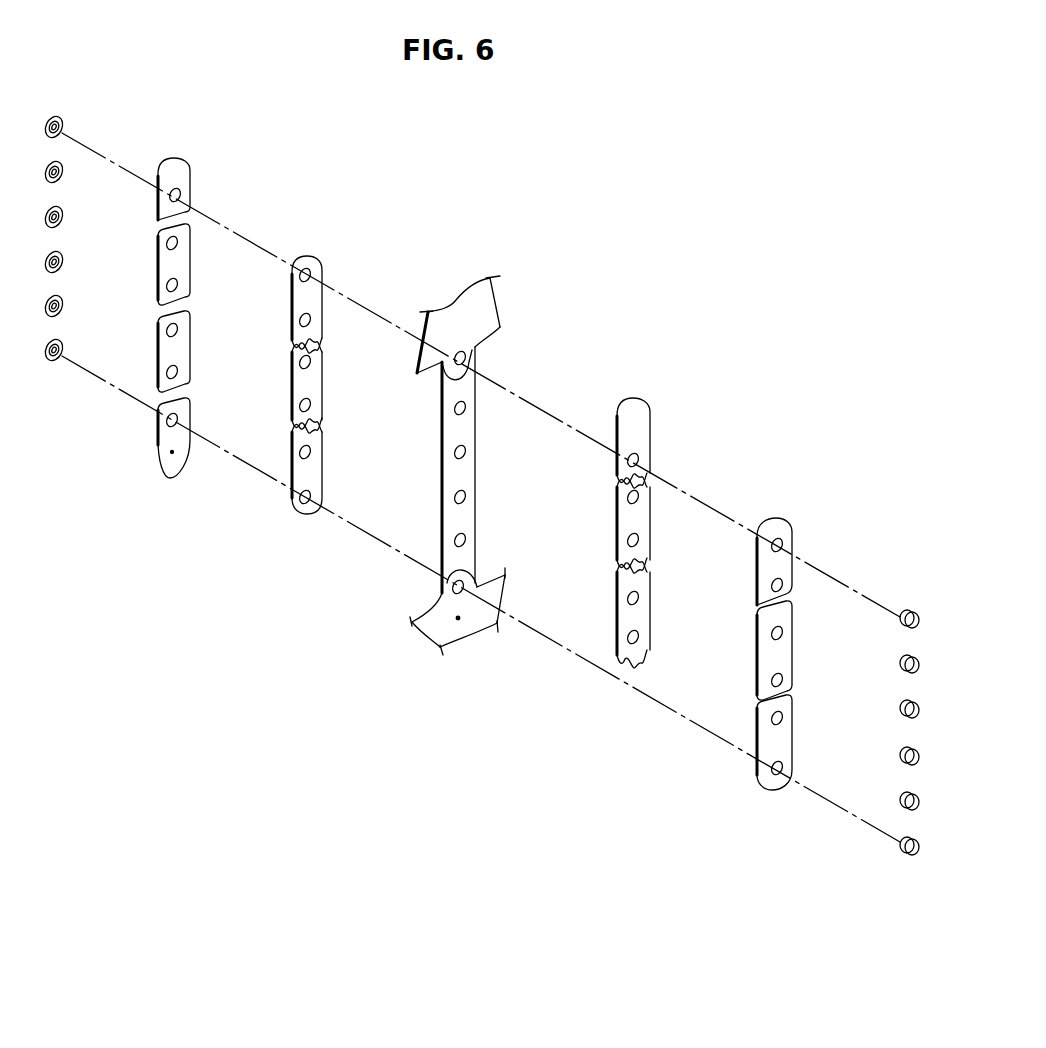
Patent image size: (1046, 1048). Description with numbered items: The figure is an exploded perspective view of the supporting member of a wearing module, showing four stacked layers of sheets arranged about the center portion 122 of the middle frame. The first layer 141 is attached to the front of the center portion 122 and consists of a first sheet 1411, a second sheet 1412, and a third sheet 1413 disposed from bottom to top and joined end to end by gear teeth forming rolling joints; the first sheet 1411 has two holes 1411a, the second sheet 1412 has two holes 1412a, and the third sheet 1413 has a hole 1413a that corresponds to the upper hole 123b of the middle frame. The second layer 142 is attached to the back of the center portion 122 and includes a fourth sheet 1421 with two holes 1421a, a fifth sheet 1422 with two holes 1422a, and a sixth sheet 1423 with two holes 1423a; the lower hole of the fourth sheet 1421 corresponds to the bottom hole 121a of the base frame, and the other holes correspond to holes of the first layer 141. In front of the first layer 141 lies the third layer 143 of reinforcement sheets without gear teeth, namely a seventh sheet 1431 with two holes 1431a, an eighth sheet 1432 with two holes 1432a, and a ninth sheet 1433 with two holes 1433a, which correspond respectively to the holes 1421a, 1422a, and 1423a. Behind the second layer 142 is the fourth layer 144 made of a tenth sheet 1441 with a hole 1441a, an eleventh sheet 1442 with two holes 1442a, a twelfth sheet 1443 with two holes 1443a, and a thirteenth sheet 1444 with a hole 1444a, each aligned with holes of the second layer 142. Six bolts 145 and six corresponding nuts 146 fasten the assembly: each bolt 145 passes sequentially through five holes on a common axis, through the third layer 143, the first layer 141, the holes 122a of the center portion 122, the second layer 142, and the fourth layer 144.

The bottom hole 121a is at (452, 587).
The center portion 122 is at (460, 465).
The holes 122a is at (466, 538).
The upper hole 123b is at (466, 358).
The first layer 141 is at (639, 576).
The first sheet 1411 is at (635, 613).
The holes 1411a is at (639, 637).
The second sheet 1412 is at (635, 523).
The holes 1412a is at (639, 540).
The third sheet 1413 is at (648, 435).
The hole 1413a is at (639, 457).
The second layer 142 is at (321, 424).
The fourth sheet 1421 is at (316, 472).
The holes 1421a is at (311, 494).
The fifth sheet 1422 is at (314, 390).
The holes 1422a is at (311, 402).
The sixth sheet 1423 is at (321, 290).
The holes 1423a is at (311, 316).
The third layer 143 is at (785, 703).
The seventh sheet 1431 is at (785, 742).
The holes 1431a is at (782, 765).
The eighth sheet 1432 is at (784, 650).
The holes 1432a is at (782, 678).
The ninth sheet 1433 is at (783, 559).
The holes 1433a is at (782, 582).
The fourth layer 144 is at (179, 359).
The tenth sheet 1441 is at (179, 434).
The hole 1441a is at (178, 417).
The eleventh sheet 1442 is at (179, 351).
The holes 1442a is at (177, 371).
The twelfth sheet 1443 is at (179, 264).
The holes 1443a is at (177, 283).
The thirteenth sheet 1444 is at (179, 189).
The hole 1444a is at (180, 192).
The bolts 145 is at (898, 868).
The nuts 146 is at (40, 375).